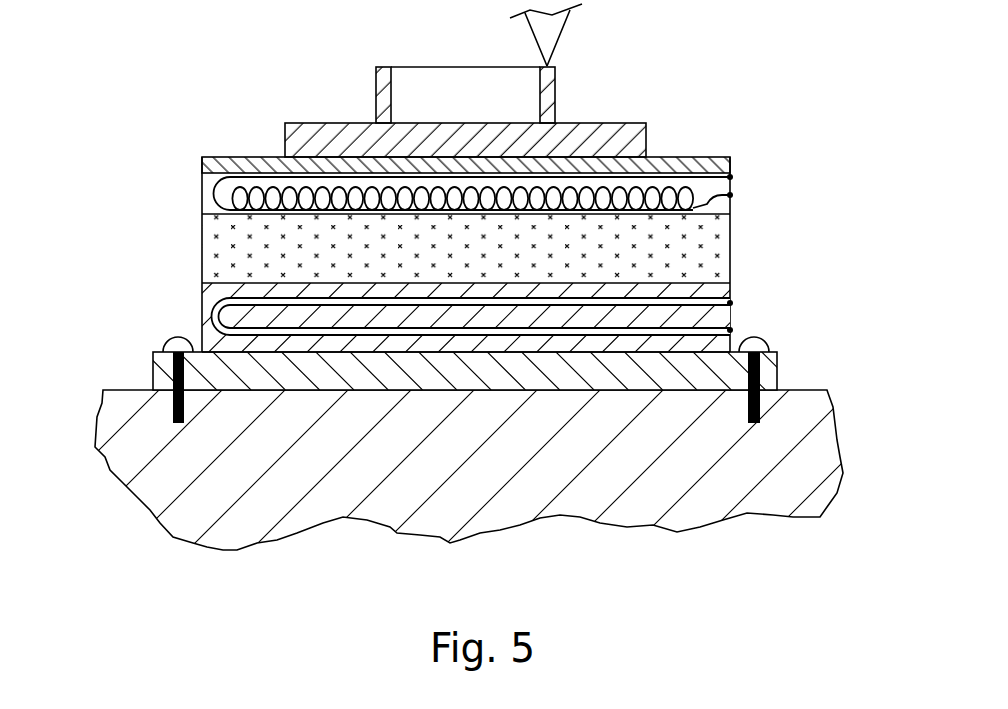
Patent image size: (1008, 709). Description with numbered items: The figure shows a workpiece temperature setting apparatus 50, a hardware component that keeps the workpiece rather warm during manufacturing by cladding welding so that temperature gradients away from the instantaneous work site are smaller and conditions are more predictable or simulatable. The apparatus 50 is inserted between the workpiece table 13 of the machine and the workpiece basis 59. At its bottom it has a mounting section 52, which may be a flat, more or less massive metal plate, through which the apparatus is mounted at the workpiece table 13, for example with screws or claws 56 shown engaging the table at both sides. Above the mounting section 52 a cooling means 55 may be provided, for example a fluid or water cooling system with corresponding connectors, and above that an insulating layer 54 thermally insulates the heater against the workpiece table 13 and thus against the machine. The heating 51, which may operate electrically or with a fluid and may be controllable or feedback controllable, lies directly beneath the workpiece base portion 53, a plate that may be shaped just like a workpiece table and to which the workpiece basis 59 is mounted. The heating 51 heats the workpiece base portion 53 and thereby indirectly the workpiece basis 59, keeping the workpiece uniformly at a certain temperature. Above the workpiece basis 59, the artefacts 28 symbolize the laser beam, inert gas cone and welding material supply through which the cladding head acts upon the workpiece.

The workpiece table 13 is at (760, 497).
The artefacts of the cladding head 28 is at (552, 33).
The workpiece temperature setting apparatus 50 is at (146, 161).
The heating 51 is at (690, 188).
The mounting section 52 is at (767, 370).
The workpiece base portion 53 is at (722, 163).
The insulating layer 54 is at (717, 263).
The cooling means 55 is at (722, 320).
The screws or claws 56 is at (178, 338).
The workpiece basis 59 is at (647, 140).